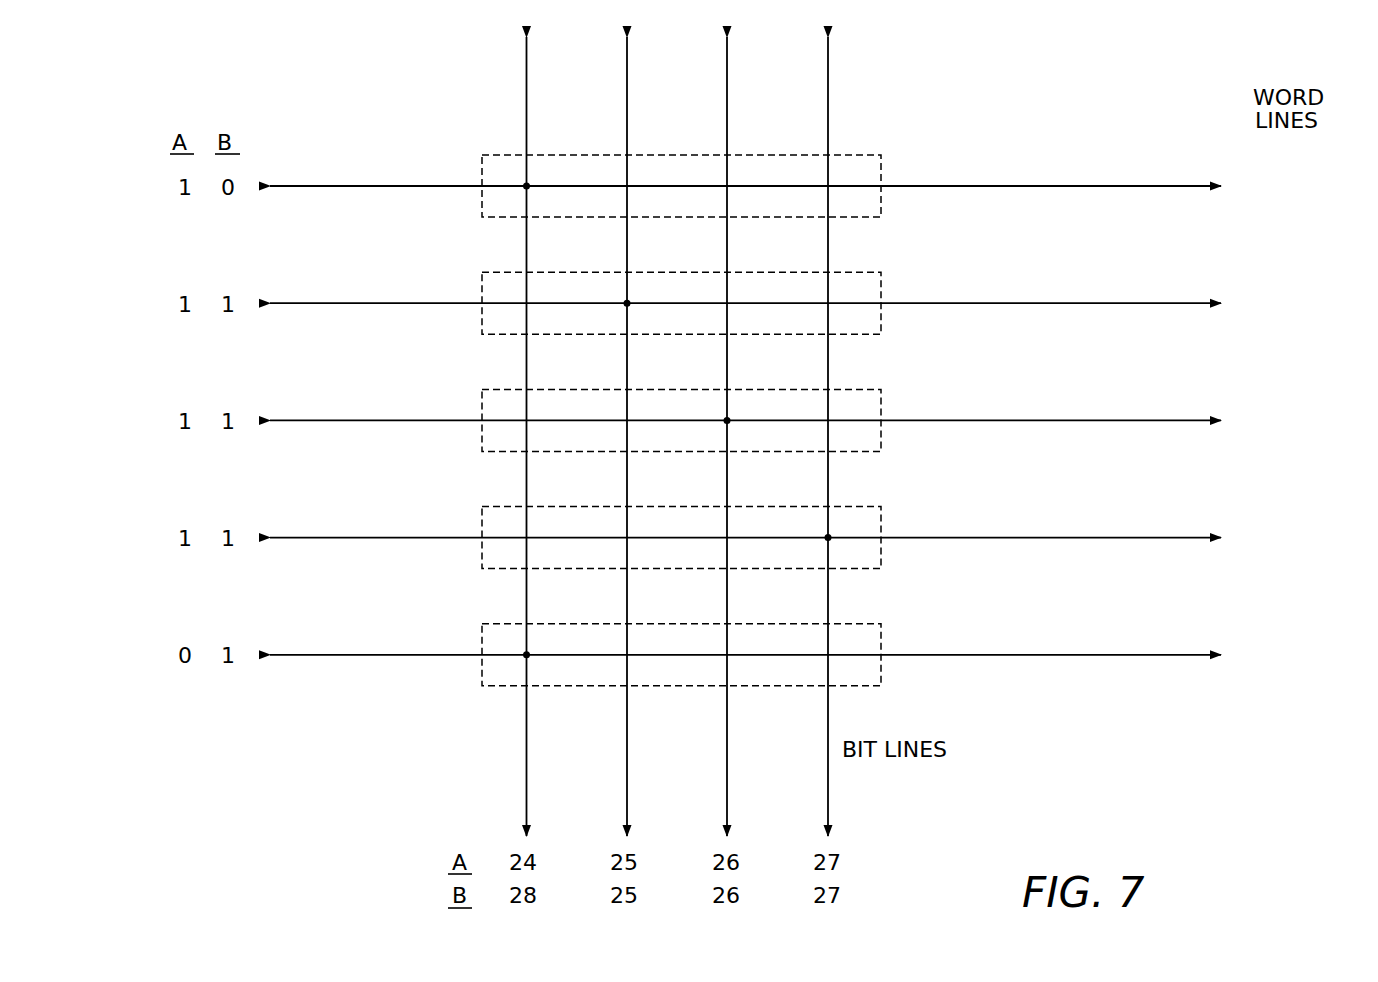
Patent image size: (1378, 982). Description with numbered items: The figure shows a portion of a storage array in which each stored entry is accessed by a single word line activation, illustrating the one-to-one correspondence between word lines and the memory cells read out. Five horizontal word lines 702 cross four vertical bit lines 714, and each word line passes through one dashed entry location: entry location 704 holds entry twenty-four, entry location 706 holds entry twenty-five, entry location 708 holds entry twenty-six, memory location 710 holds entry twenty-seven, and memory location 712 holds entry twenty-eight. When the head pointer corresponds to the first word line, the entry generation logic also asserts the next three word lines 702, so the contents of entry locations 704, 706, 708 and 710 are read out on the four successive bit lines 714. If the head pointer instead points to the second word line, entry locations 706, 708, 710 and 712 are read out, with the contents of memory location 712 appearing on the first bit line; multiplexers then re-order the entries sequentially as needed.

The word lines 702 is at (807, 409).
The entry location 704 is at (867, 155).
The entry location 706 is at (867, 272).
The entry location 708 is at (867, 389).
The memory location 710 is at (867, 507).
The memory location 712 is at (867, 624).
The bit lines 714 is at (636, 436).